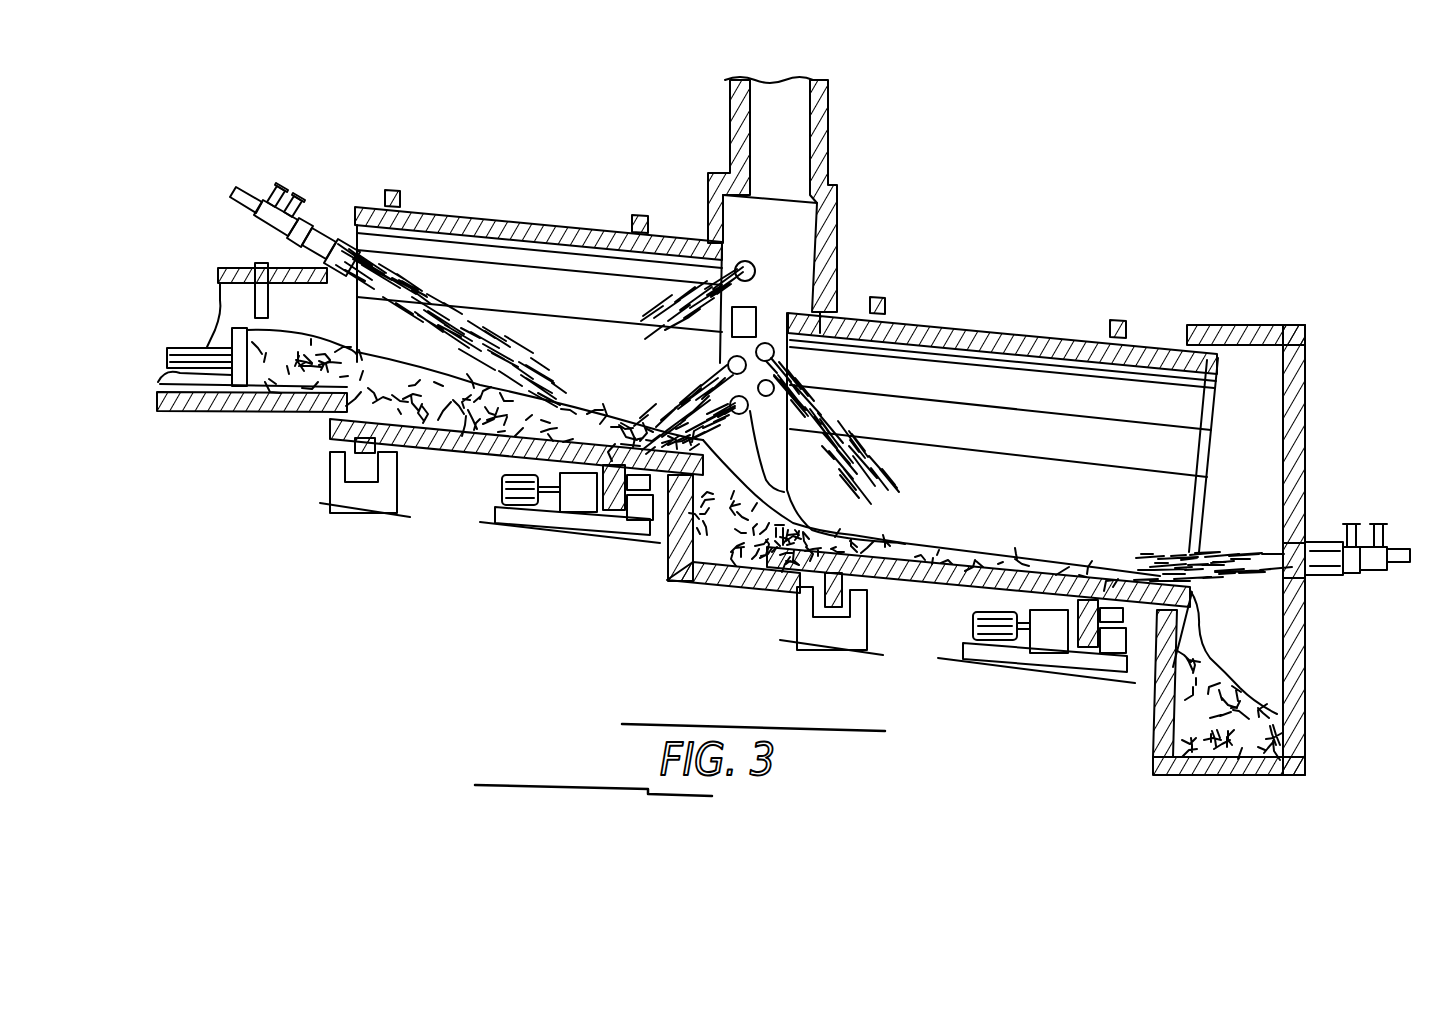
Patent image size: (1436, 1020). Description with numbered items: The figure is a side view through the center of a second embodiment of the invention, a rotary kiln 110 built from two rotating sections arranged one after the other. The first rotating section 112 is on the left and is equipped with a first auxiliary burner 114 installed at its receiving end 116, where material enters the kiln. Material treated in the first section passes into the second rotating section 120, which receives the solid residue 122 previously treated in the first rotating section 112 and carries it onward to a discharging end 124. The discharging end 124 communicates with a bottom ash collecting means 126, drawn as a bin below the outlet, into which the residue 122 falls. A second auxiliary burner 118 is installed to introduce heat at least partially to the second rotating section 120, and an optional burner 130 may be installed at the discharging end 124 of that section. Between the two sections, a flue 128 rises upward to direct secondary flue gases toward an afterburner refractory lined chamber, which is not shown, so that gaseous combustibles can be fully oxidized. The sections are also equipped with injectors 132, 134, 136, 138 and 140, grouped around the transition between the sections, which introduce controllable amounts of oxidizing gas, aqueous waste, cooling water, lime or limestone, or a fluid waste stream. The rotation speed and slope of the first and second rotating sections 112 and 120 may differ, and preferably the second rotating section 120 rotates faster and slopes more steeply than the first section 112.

The rotary kiln 110 is at (578, 198).
The first rotating section 112 is at (463, 206).
The first auxiliary burner 114 is at (318, 230).
The receiving end 116 is at (217, 305).
The second auxiliary burner 118 is at (806, 395).
The second rotating section 120 is at (1064, 338).
The solid residue 122 is at (803, 520).
The discharging end 124 is at (1258, 452).
The bottom ash collecting means 126 is at (1258, 639).
The flue 128 is at (858, 27).
The optional burner 130 is at (1323, 537).
The injector 132 is at (754, 268).
The injector 134 is at (728, 364).
The injector 136 is at (770, 481).
The injector 138 is at (762, 345).
The injector 140 is at (775, 388).